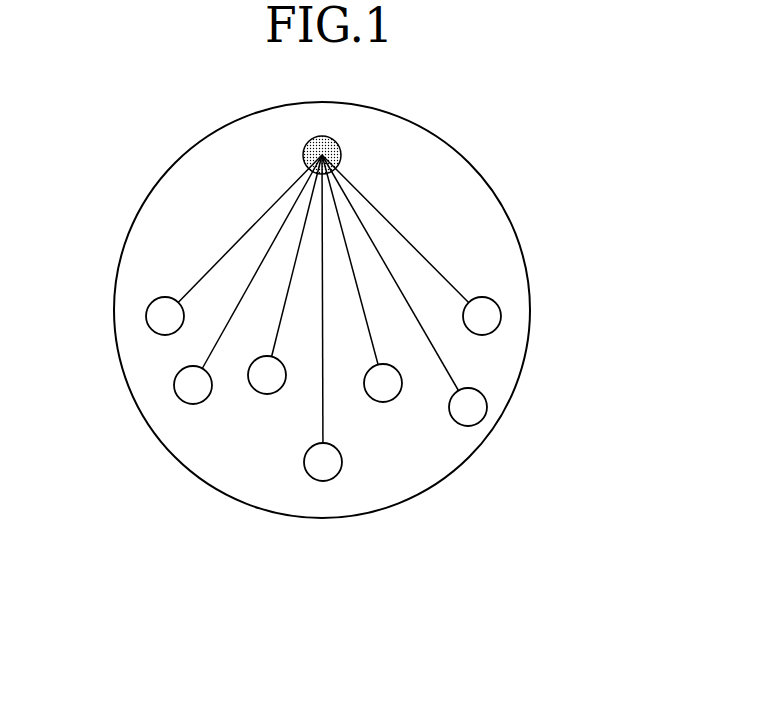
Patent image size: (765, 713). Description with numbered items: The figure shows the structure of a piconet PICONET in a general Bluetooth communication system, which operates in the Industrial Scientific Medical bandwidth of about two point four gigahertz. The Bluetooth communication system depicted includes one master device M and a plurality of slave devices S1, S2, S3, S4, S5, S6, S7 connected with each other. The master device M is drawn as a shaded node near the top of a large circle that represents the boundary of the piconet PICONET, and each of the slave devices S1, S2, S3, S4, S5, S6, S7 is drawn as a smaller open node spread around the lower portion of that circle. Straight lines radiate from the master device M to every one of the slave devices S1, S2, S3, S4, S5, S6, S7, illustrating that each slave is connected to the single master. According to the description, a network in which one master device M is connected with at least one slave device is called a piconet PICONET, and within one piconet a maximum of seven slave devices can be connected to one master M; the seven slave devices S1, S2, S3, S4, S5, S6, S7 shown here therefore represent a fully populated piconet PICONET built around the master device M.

The master device M is at (340, 148).
The piconet PICONET is at (492, 188).
The slave device S1 is at (153, 315).
The slave device S2 is at (183, 388).
The slave device S3 is at (262, 380).
The slave device S4 is at (322, 467).
The slave device S5 is at (385, 386).
The slave device S6 is at (470, 405).
The slave device S7 is at (483, 314).